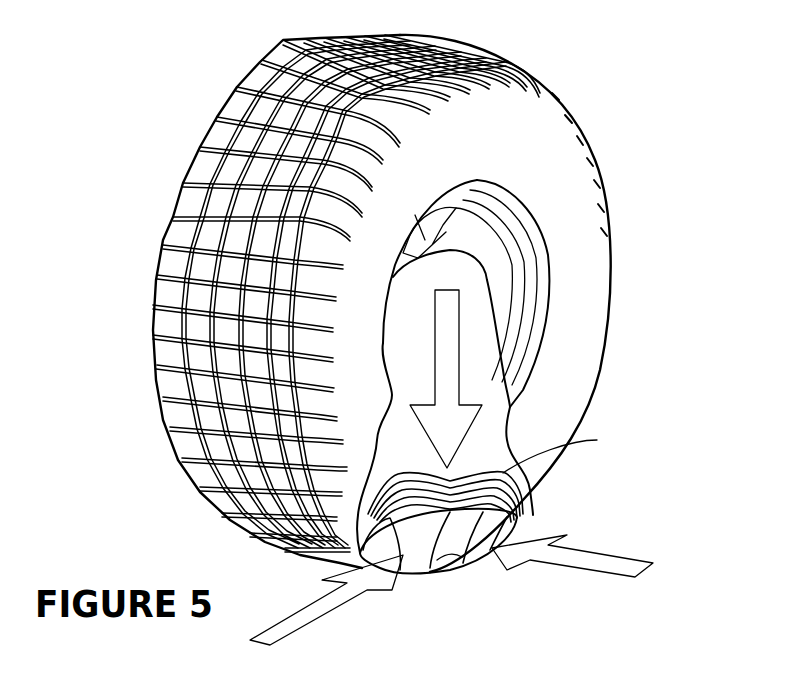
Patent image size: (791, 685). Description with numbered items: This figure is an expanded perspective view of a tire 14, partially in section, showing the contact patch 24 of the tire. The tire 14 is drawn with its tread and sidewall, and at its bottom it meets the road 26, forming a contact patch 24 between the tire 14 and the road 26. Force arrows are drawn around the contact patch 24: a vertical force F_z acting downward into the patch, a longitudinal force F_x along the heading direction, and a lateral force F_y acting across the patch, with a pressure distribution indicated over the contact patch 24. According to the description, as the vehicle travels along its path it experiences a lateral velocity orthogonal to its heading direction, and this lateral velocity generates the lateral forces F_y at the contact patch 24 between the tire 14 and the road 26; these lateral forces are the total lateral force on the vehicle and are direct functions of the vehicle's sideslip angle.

The tire 14 is at (555, 92).
The contact patch 24 is at (472, 560).
The road 26 is at (480, 558).